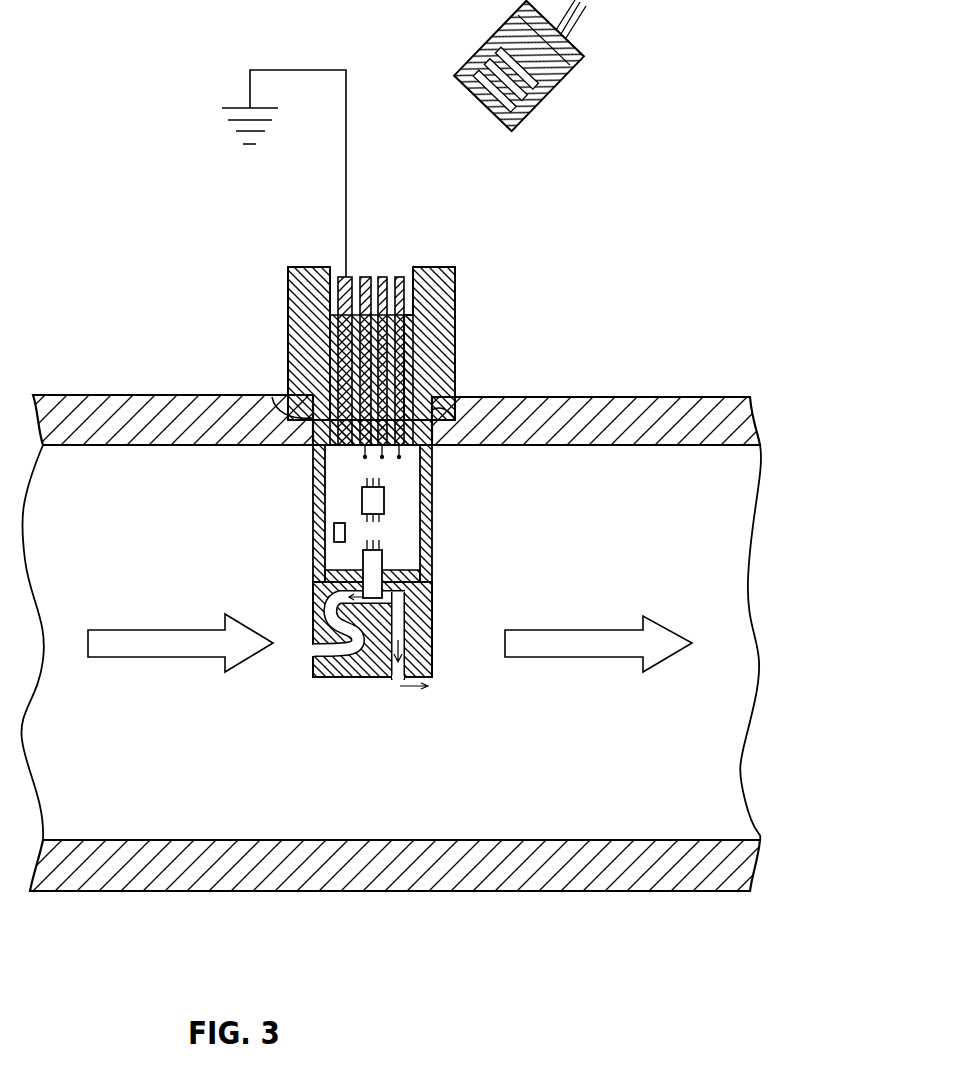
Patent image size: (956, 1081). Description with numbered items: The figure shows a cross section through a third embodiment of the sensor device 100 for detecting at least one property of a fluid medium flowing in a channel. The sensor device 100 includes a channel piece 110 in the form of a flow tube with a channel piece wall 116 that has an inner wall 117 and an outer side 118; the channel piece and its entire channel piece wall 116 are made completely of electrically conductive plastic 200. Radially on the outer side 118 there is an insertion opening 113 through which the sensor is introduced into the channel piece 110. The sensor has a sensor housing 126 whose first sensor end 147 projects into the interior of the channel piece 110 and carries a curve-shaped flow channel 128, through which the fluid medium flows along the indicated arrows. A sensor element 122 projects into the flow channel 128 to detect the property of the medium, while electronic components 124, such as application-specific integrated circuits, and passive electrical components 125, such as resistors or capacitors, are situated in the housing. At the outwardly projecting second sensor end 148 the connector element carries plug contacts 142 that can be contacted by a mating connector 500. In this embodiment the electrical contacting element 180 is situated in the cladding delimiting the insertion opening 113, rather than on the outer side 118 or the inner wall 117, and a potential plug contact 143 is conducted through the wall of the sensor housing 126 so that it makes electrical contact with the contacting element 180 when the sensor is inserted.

The sensor device 100 is at (150, 225).
The channel piece 110 is at (586, 372).
The insertion opening 113 is at (447, 410).
The channel piece wall 116 is at (625, 870).
The inner wall 117 is at (468, 838).
The outer side 118 is at (520, 893).
The sensor element 122 is at (378, 568).
The electronic components 124 is at (378, 500).
The passive electrical components 125 is at (334, 530).
The sensor housing 126 is at (437, 326).
The flow channel 128 is at (333, 678).
The plug contacts 142 is at (382, 276).
The potential plug contact 143 is at (338, 268).
The first sensor end 147 is at (380, 678).
The second sensor end 148 is at (305, 265).
The electrical contacting element 180 is at (272, 398).
The electrically conductive plastic 200 is at (697, 420).
The mating connector 500 is at (570, 80).